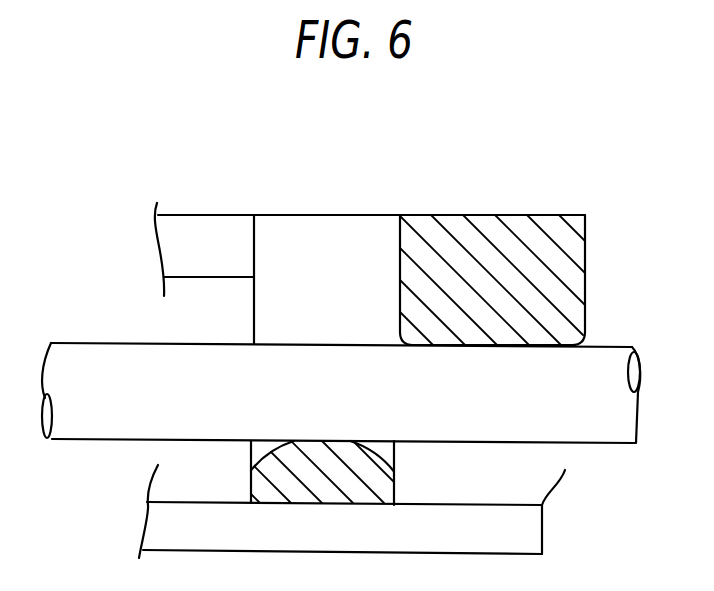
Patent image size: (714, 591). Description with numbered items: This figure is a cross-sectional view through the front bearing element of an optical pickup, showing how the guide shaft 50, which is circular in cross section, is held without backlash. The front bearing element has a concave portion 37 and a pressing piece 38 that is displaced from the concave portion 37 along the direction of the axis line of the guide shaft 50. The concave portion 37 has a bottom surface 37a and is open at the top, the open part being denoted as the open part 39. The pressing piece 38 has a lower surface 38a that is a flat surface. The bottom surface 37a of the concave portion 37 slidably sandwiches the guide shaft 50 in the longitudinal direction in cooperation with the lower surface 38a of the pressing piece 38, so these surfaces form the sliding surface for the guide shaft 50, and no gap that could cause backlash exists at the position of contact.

The concave portion 37 is at (252, 456).
The bottom surface 37a is at (283, 443).
The pressing piece 38 is at (480, 223).
The lower surface 38a is at (515, 347).
The open part 39 is at (322, 226).
The guide shaft 50 is at (605, 345).